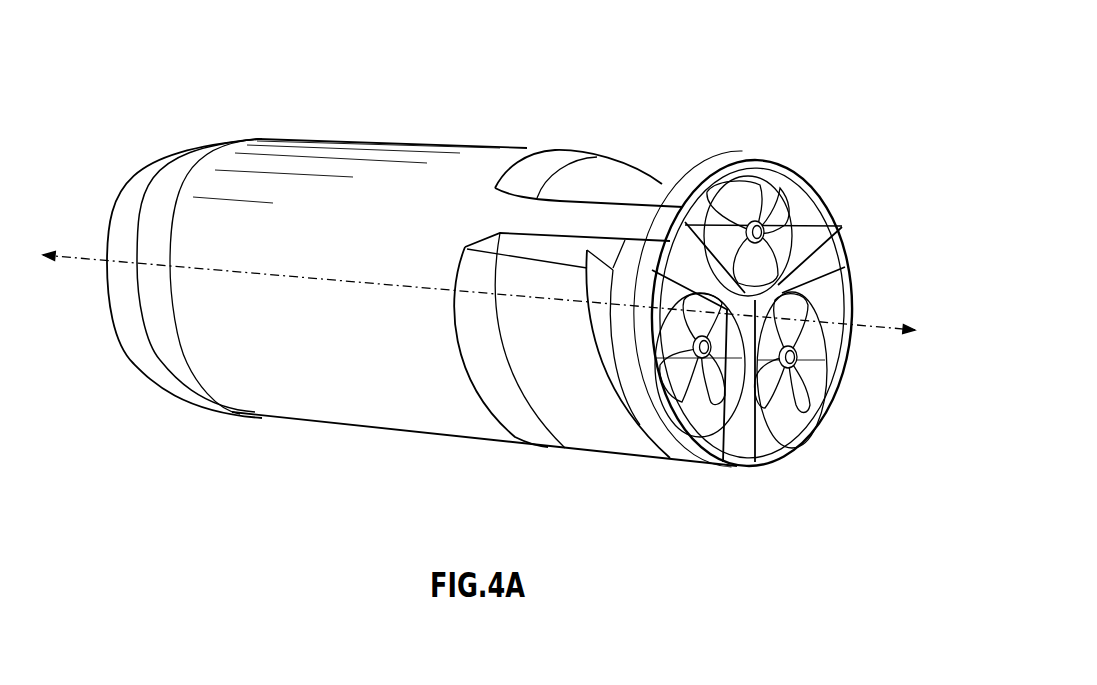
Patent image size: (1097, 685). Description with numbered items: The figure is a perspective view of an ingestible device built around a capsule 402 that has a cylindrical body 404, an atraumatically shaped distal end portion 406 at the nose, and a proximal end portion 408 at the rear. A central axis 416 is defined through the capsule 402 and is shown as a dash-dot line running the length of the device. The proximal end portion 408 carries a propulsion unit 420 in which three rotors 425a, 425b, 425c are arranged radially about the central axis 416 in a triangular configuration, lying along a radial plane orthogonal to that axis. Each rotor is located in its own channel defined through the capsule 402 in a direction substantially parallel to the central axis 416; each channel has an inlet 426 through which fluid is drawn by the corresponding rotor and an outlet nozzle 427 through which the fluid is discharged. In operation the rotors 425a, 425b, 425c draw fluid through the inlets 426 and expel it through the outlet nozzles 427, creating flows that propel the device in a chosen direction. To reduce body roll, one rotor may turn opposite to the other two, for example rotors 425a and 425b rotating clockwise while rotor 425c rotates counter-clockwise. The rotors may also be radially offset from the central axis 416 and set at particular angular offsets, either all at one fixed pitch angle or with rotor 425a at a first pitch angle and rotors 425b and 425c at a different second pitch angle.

The capsule 402 is at (245, 436).
The cylindrical body 404 is at (363, 418).
The distal end portion 406 is at (228, 128).
The proximal end portion 408 is at (681, 125).
The central axis 416 is at (60, 250).
The propulsion unit 420 is at (878, 254).
The rotor 425a is at (670, 392).
The rotor 425b is at (757, 180).
The rotor 425c is at (807, 370).
The inlet 426 is at (600, 172).
The outlet nozzle 427 is at (810, 209).